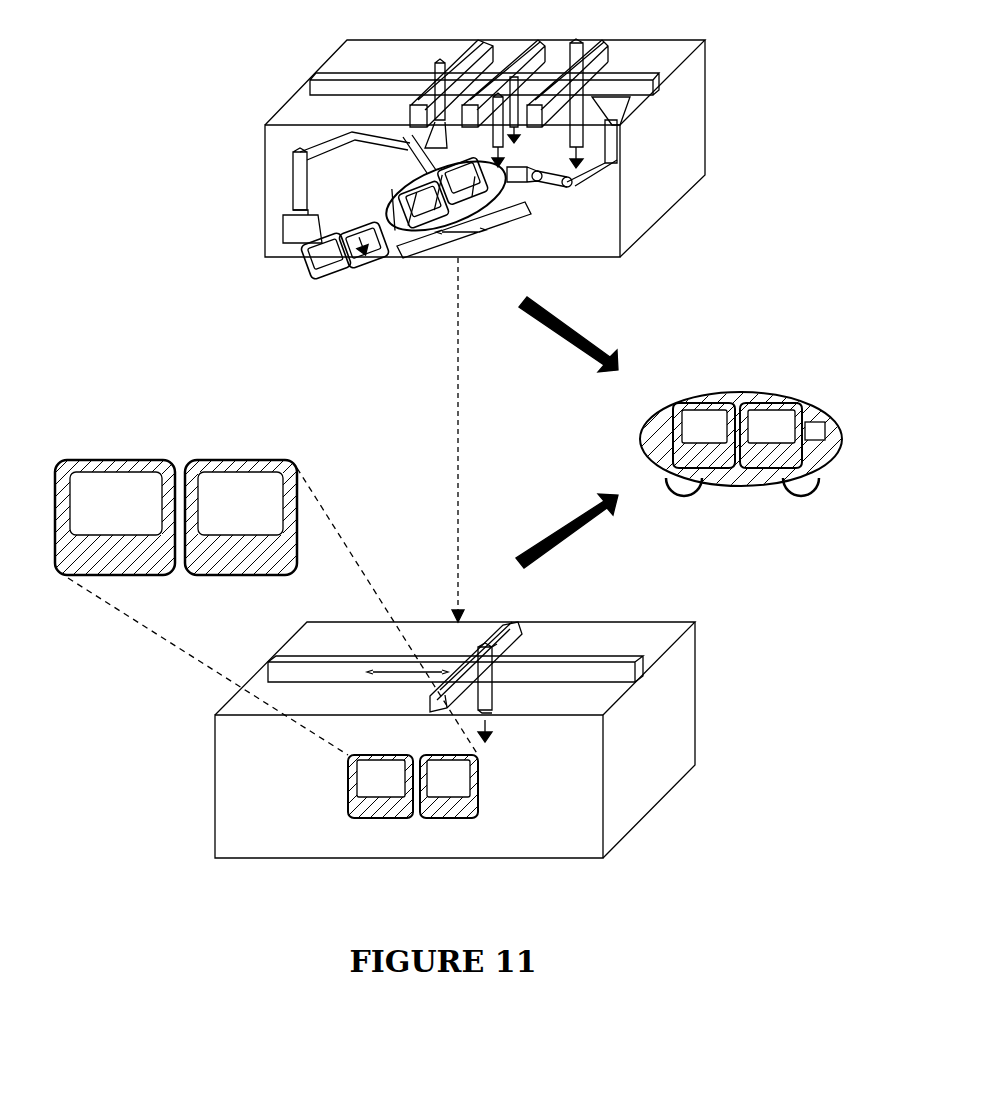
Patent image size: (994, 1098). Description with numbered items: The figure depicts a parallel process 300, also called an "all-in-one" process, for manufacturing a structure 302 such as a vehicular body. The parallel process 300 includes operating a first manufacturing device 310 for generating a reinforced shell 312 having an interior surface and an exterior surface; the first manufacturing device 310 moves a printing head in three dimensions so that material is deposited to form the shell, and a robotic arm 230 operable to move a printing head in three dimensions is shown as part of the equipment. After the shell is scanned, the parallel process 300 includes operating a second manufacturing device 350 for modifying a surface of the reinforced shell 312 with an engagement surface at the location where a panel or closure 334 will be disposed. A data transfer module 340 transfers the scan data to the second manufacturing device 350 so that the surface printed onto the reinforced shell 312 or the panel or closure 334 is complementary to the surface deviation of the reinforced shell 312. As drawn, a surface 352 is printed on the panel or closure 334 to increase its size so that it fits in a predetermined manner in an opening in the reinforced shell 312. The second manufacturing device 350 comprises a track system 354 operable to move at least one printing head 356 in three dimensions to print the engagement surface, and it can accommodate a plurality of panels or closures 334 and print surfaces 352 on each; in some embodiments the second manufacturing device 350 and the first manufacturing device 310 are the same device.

The parallel process 300 is at (188, 323).
The first manufacturing device 310 is at (234, 97).
The robotic arm 230 is at (293, 184).
The structure 302 is at (752, 312).
The reinforced shell 312 is at (748, 488).
The panel or closure 334 is at (689, 402).
The surface 352 is at (78, 460).
The data transfer module 340 is at (462, 447).
The second manufacturing device 350 is at (171, 775).
The track system 354 is at (448, 637).
The printing head 356 is at (492, 684).